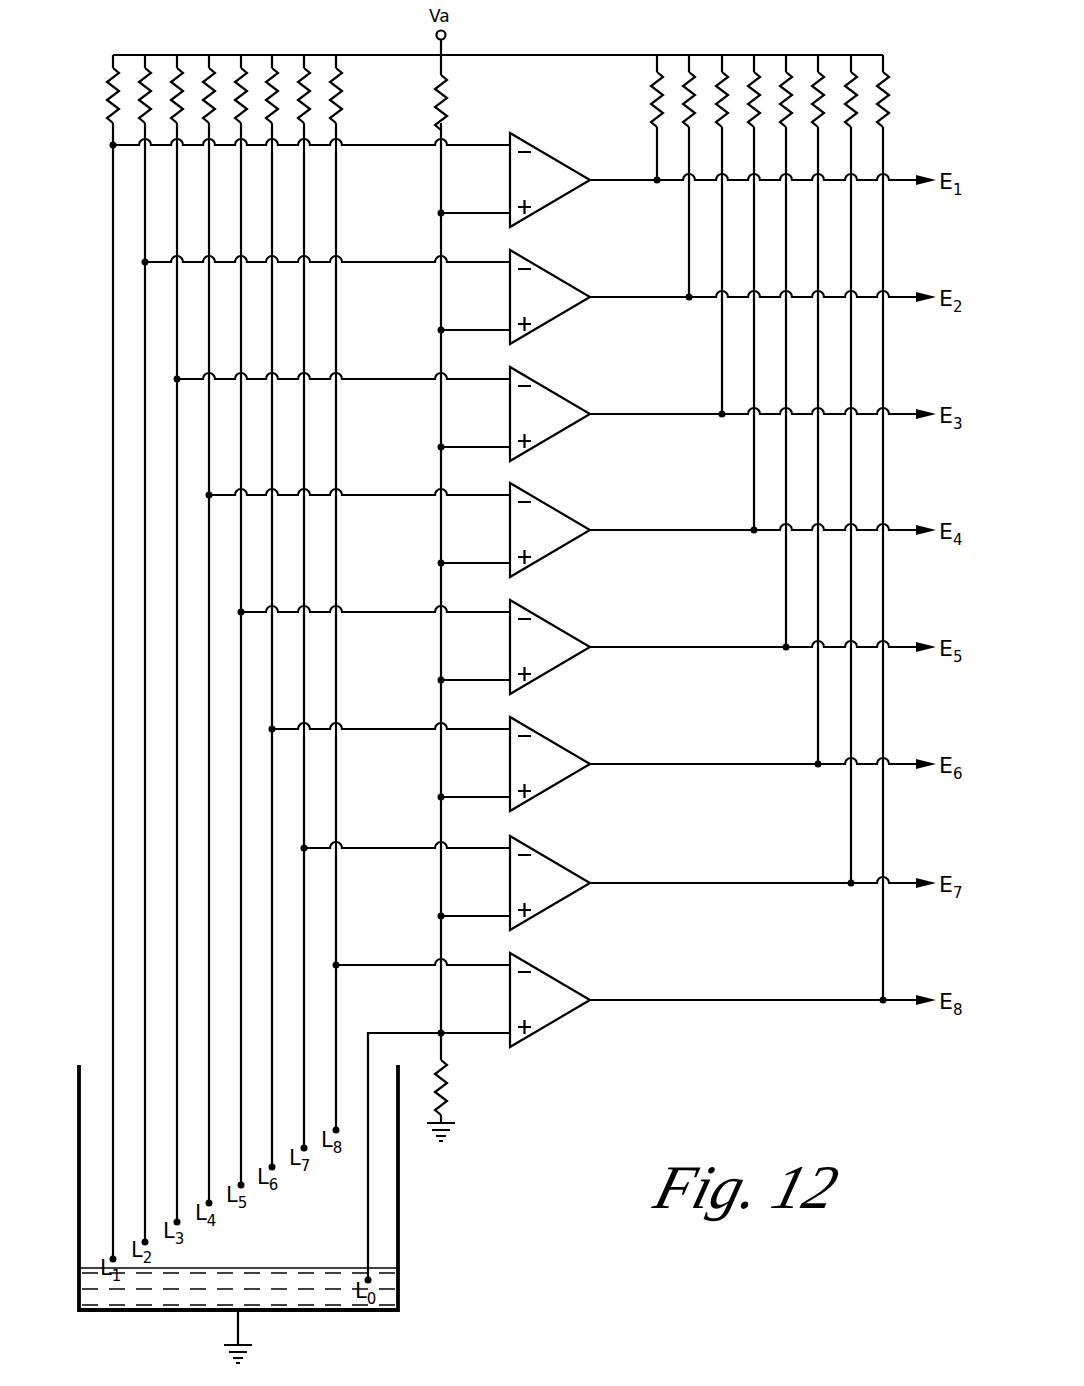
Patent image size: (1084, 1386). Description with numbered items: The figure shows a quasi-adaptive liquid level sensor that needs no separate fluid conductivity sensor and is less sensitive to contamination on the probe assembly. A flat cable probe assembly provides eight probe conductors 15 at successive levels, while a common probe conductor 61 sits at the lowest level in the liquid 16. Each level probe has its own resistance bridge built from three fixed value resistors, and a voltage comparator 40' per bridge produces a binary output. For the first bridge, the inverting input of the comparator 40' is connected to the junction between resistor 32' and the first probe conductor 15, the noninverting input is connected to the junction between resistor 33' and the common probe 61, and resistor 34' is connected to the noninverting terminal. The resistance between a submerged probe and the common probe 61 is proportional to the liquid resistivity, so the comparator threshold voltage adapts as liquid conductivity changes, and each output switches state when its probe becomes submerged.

The resistor 32' is at (221, 89).
The resistor 33' is at (465, 102).
The resistor 34' is at (474, 1100).
The voltage comparator 40' is at (518, 174).
The probe conductors 15 is at (112, 992).
The liquid in container 16 is at (400, 1268).
The common probe conductor 61 is at (368, 1236).